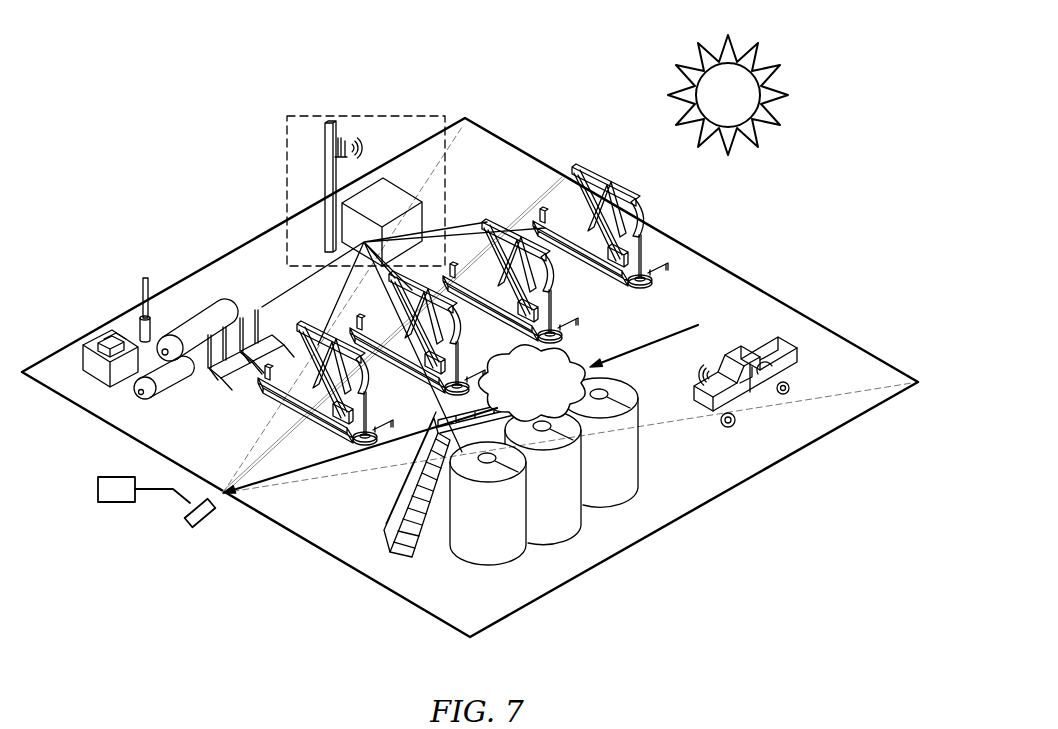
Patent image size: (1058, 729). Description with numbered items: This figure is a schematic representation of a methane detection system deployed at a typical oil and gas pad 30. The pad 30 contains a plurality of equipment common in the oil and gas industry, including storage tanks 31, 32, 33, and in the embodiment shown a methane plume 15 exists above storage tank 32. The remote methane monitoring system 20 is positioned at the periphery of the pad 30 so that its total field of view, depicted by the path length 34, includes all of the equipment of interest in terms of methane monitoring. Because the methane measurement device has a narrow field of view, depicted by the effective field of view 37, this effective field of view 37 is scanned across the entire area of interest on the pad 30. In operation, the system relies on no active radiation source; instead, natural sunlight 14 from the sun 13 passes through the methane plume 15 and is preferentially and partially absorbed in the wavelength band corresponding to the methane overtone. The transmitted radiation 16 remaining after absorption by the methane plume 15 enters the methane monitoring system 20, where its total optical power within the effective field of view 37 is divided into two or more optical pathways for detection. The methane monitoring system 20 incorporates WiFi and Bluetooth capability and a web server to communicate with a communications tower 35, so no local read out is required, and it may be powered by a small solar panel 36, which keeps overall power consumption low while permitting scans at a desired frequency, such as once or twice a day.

The sun 13 is at (720, 97).
The sunlight 14 is at (657, 352).
The methane plume 15 is at (551, 399).
The transmitted radiation 16 is at (323, 463).
The methane monitoring system 20 is at (210, 523).
The oil and gas pad 30 is at (172, 195).
The storage tank 31 is at (492, 547).
The storage tank 32 is at (550, 520).
The storage tank 33 is at (610, 492).
The path length 34 is at (462, 128).
The communications tower 35 is at (333, 133).
The solar panel 36 is at (112, 485).
The effective field of view 37 is at (550, 183).